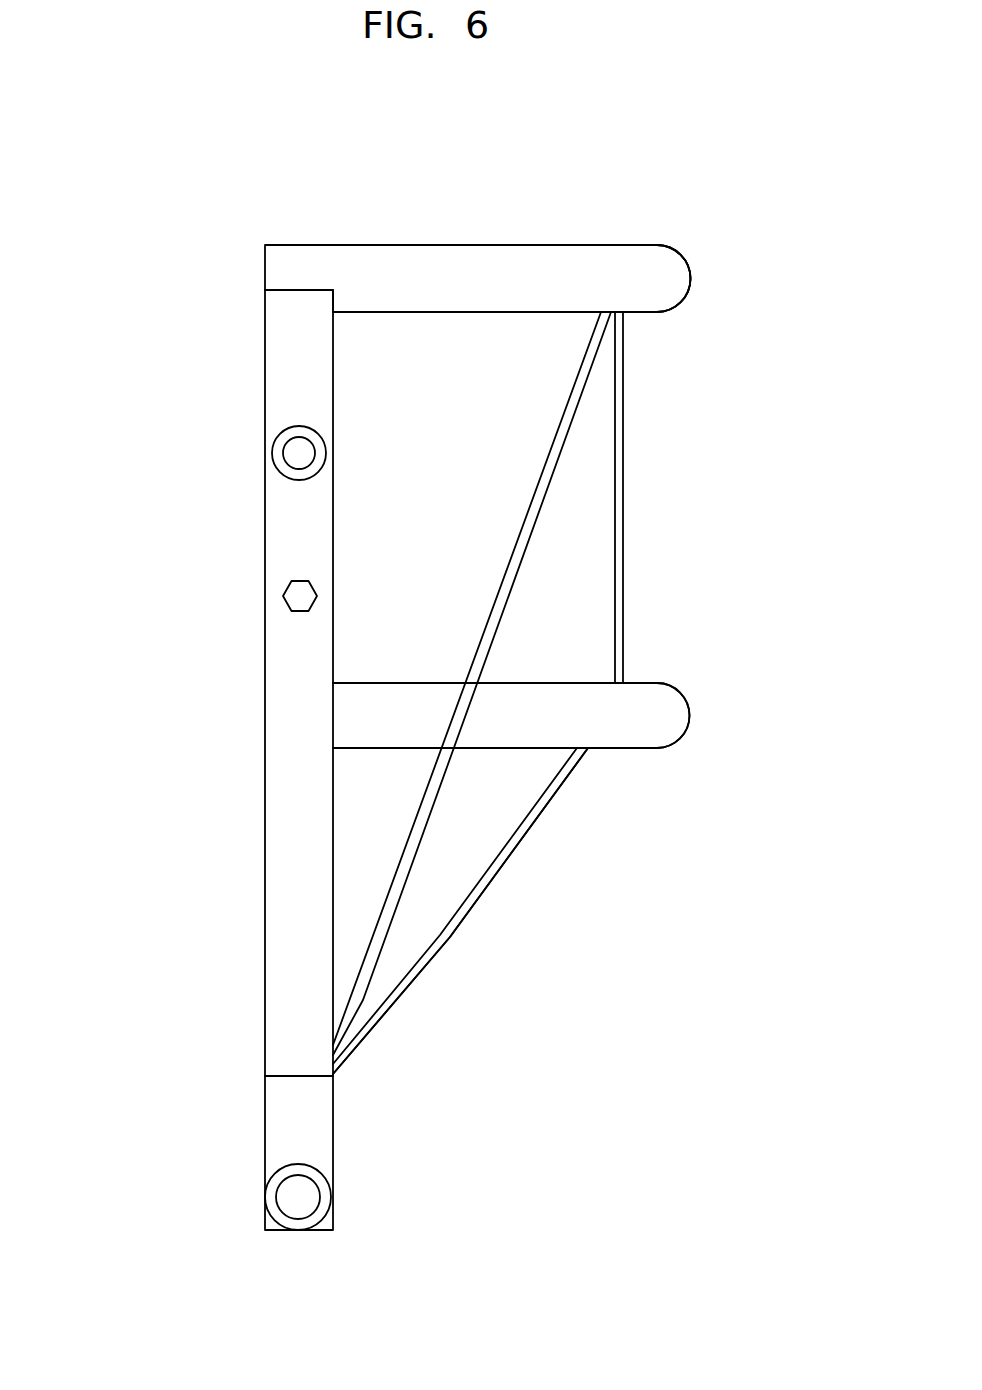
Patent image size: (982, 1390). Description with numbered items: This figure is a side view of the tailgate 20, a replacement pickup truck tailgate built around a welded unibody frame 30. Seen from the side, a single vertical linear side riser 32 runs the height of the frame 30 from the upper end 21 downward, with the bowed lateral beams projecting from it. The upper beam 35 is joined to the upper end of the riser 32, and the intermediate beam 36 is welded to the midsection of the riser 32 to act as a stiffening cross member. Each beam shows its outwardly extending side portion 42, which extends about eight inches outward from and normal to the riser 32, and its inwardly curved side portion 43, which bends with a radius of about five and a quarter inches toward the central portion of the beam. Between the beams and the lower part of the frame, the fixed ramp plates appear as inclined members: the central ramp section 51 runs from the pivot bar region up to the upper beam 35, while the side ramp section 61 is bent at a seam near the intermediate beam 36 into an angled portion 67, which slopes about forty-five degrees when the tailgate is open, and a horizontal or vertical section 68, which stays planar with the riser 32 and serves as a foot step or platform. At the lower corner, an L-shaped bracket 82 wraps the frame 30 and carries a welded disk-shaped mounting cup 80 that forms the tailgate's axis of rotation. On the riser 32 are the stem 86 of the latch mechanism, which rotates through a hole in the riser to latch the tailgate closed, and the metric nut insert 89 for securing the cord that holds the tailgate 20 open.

The tailgate 20 is at (429, 200).
The upper end 21 is at (560, 255).
The unibody frame 30 is at (355, 245).
The side riser 32 is at (277, 717).
The upper beam 35 is at (618, 253).
The intermediate beam 36 is at (665, 695).
The outwardly extending side portion 42 is at (481, 305).
The inwardly curved side portion 43 is at (670, 297).
The central ramp section 51 is at (523, 523).
The side ramp section 61 is at (473, 895).
The angled portion 67 is at (513, 845).
The horizontal or vertical section 68 is at (620, 514).
The mounting cup 80 is at (263, 1180).
The L-shaped bracket 82 is at (272, 1115).
The stem 86 is at (273, 442).
The metric nut insert 89 is at (290, 596).